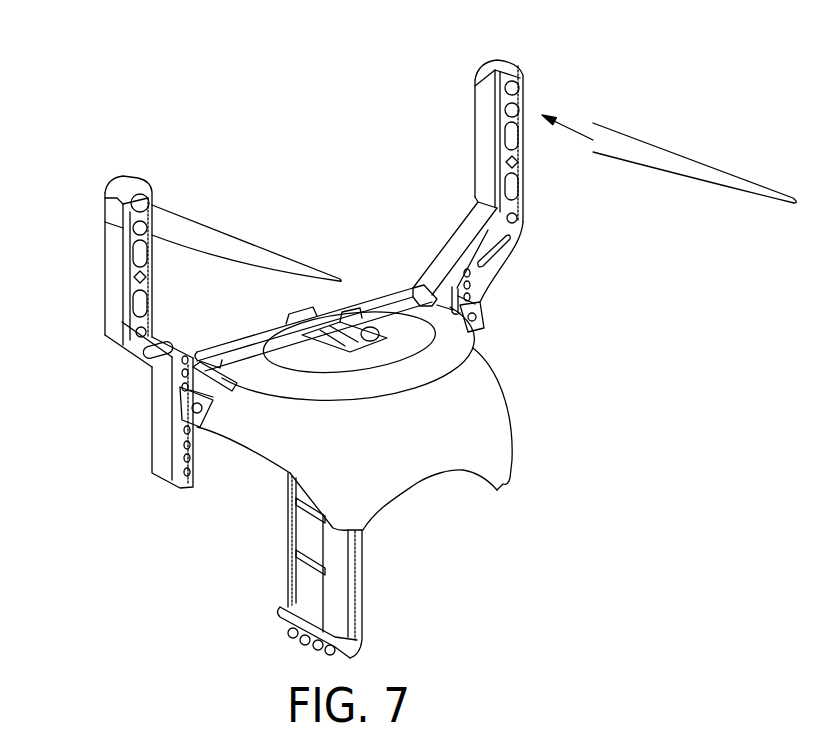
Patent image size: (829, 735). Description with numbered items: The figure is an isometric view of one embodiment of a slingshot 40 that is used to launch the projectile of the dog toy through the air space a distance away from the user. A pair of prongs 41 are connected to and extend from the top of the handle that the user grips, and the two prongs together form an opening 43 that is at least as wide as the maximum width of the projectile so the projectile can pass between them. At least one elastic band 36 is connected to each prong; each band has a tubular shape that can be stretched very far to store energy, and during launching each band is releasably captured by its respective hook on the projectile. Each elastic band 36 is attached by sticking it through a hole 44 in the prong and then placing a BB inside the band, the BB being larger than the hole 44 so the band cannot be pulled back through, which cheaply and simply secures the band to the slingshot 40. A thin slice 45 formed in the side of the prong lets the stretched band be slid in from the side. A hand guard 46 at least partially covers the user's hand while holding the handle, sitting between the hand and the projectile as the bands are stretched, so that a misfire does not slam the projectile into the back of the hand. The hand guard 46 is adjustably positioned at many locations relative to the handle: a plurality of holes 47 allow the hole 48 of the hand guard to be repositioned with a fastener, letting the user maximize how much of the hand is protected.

The elastic band 36 is at (212, 227).
The slingshot 40 is at (250, 80).
The pair of prongs 41 is at (113, 267).
The opening 43 is at (343, 212).
The hole 44 is at (516, 72).
The thin slice 45 is at (107, 193).
The hand guard 46 is at (498, 378).
The holes 47 is at (176, 485).
The hole of the hand guard 48 is at (481, 325).